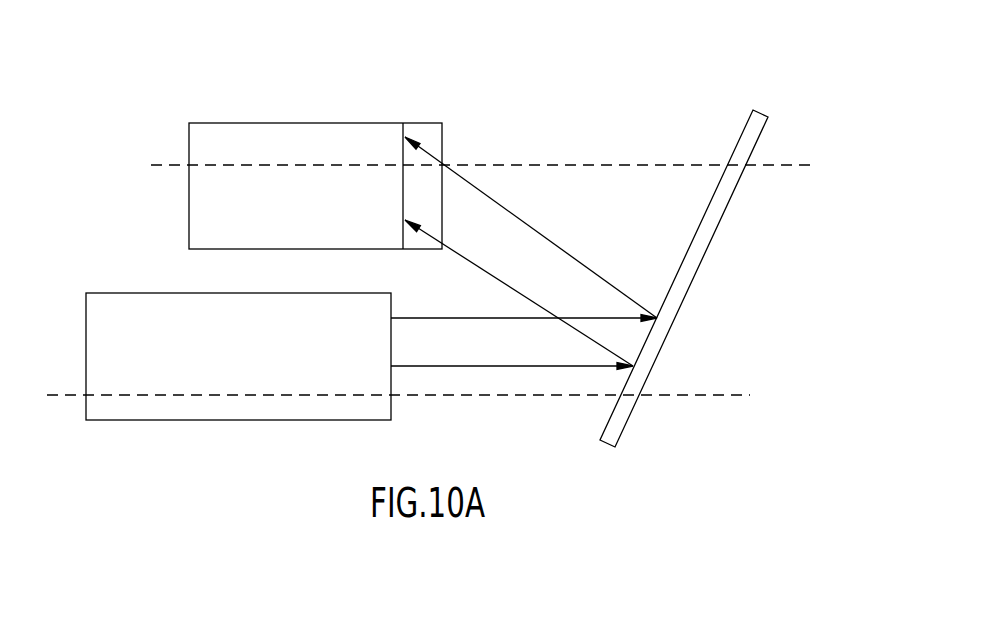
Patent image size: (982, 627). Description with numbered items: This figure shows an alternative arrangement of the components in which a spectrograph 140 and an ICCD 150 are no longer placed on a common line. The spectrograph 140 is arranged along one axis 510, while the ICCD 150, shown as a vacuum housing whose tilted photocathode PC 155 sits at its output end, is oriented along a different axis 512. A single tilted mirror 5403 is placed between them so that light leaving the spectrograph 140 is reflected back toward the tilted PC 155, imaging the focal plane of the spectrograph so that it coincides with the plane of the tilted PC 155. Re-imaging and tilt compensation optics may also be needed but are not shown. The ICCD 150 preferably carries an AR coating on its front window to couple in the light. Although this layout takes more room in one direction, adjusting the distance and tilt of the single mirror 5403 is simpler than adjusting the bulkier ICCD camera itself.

The spectrograph 140 is at (155, 293).
The ICCD 150 is at (233, 123).
The tilted PC 155 is at (422, 123).
The axis 510 is at (713, 395).
The axis 512 is at (790, 164).
The mirror 5403 is at (738, 139).